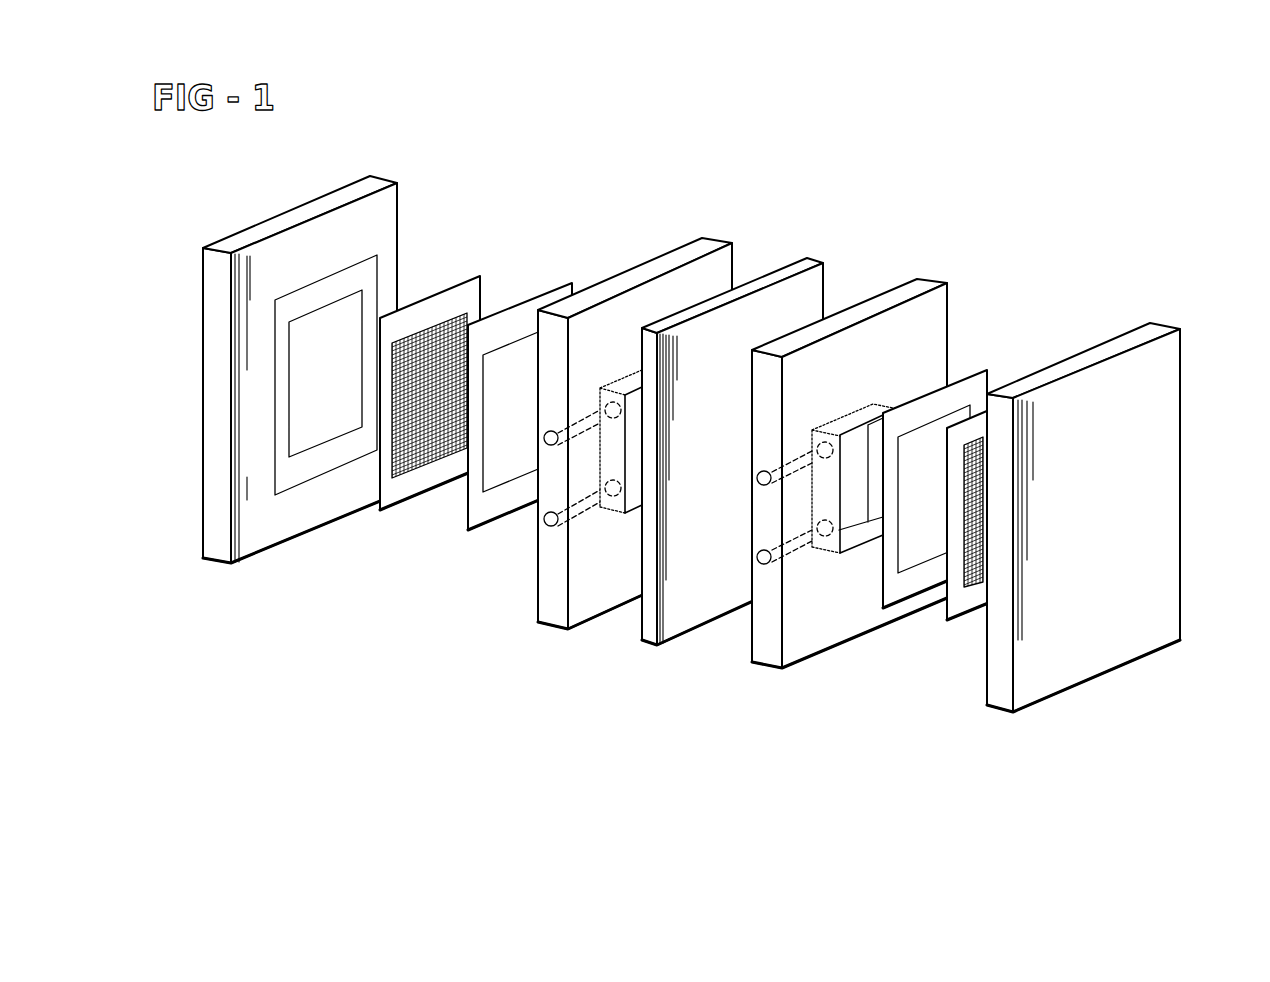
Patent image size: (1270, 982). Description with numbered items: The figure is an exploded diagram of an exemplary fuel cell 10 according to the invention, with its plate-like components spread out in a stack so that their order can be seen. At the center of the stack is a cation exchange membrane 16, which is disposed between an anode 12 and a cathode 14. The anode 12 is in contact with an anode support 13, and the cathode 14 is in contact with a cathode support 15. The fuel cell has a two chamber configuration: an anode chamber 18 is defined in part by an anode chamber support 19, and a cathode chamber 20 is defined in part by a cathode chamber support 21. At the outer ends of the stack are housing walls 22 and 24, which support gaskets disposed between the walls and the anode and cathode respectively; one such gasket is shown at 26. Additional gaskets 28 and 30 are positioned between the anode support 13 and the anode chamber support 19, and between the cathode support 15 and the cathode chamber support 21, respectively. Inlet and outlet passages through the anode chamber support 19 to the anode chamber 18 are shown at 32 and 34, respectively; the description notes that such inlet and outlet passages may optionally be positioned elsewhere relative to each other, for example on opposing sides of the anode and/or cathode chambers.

The fuel cell 10 is at (1094, 285).
The anode 12 is at (460, 330).
The anode support 13 is at (403, 493).
The cathode 14 is at (972, 560).
The cathode support 15 is at (977, 601).
The cation exchange membrane 16 is at (812, 289).
The anode chamber 18 is at (635, 462).
The anode chamber support 19 is at (722, 268).
The cathode chamber 20 is at (853, 512).
The cathode chamber support 21 is at (937, 307).
The housing wall 22 is at (385, 212).
The housing wall 24 is at (1172, 355).
The gasket 26 is at (283, 427).
The gasket 28 is at (478, 502).
The gasket 30 is at (978, 384).
The inlet passage 32 is at (544, 438).
The outlet passage 34 is at (544, 519).